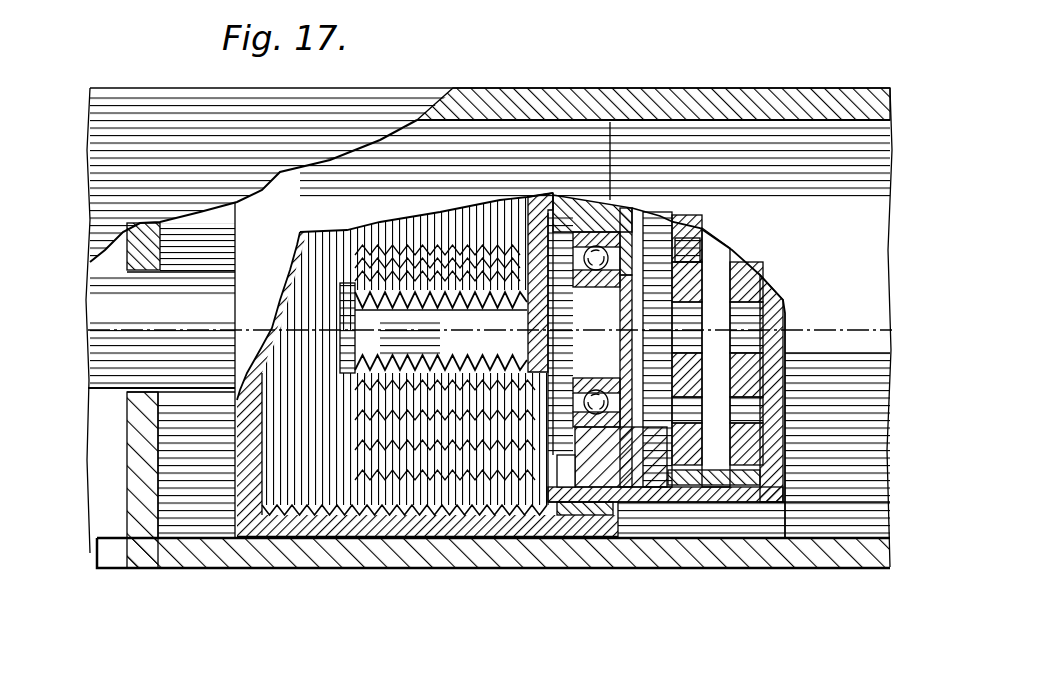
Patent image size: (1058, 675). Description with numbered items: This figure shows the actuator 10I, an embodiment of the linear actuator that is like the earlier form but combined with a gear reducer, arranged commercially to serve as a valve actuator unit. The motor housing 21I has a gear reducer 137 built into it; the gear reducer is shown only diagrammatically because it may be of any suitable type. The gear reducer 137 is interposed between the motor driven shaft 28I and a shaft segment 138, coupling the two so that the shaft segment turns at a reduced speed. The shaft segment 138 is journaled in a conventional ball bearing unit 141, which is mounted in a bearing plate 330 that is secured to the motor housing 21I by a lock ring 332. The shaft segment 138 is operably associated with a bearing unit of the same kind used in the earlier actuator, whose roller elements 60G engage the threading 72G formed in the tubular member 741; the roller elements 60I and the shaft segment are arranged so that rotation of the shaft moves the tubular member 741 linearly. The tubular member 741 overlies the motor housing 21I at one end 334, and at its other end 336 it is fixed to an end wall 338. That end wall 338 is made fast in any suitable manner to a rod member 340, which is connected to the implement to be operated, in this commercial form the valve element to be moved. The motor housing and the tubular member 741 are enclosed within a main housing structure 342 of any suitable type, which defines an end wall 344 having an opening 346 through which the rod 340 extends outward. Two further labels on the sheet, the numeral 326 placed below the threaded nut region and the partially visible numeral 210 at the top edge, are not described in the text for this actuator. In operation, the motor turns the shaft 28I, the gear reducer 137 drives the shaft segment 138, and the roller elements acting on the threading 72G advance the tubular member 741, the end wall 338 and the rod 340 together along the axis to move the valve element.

The actuator 10I is at (748, 50).
The motor housing 21I is at (810, 197).
The motor driven shaft 28I is at (783, 322).
The roller elements 60G is at (477, 204).
The roller elements 60I is at (425, 538).
The threading 72G is at (272, 540).
The gear reducer 137 is at (734, 247).
The shaft segment 138 is at (607, 305).
The ball bearing unit 141 is at (597, 214).
The reference from adjacent figure 210 is at (492, 0).
The nut body 326 is at (312, 548).
The bearing plate 330 is at (620, 467).
The lock ring 332 is at (557, 538).
The end of tubular member 334 is at (612, 470).
The other end of tubular member 336 is at (237, 528).
The end wall 338 is at (247, 460).
The rod member 340 is at (203, 293).
The main housing structure 342 is at (754, 555).
The end wall of main housing 344 is at (165, 478).
The opening 346 is at (145, 386).
The tubular member 741 is at (392, 552).